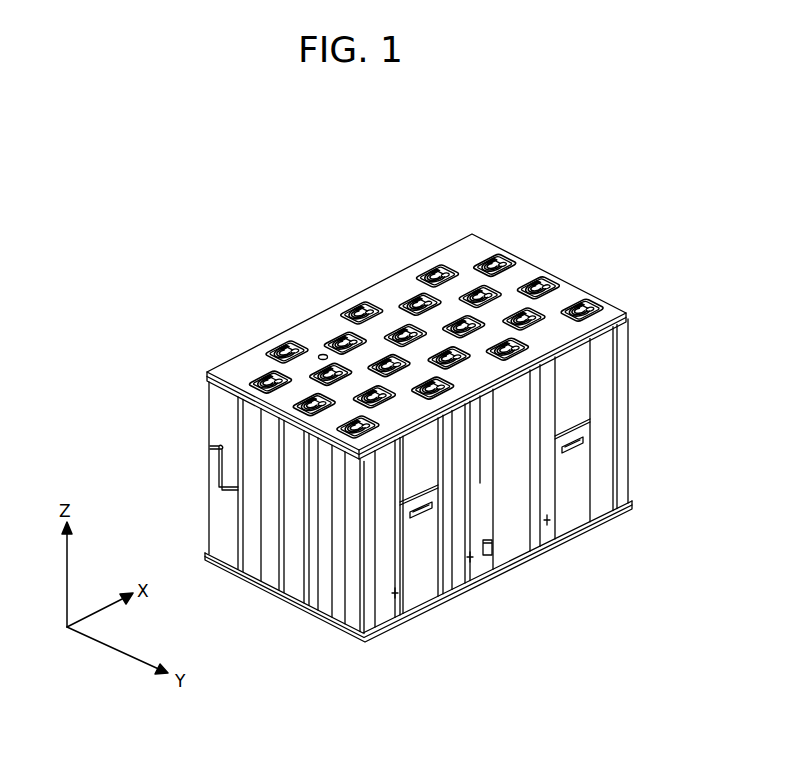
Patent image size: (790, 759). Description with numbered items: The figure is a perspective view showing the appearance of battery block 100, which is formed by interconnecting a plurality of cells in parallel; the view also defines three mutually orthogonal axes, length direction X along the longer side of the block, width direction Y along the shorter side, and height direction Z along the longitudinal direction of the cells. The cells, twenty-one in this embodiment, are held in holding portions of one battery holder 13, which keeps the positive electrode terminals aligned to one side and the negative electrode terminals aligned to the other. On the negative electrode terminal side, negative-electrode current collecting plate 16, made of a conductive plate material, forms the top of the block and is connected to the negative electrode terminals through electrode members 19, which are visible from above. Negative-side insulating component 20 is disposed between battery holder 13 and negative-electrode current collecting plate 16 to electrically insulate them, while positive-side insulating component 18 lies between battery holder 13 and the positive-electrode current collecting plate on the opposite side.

The battery block 100 is at (183, 254).
The battery holder 13 is at (607, 432).
The negative-electrode current collecting plate 16 is at (573, 302).
The positive-side insulating component 18 is at (225, 508).
The electrode members 19 is at (440, 270).
The negative-side insulating component 20 is at (227, 410).